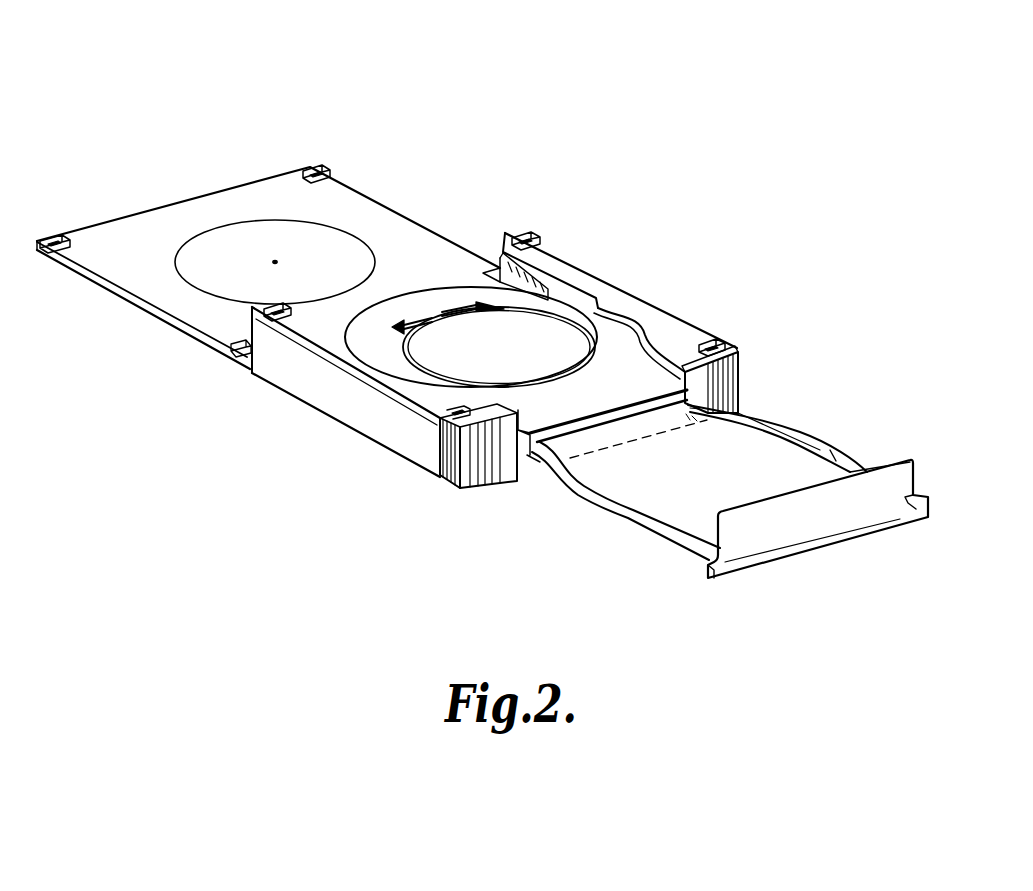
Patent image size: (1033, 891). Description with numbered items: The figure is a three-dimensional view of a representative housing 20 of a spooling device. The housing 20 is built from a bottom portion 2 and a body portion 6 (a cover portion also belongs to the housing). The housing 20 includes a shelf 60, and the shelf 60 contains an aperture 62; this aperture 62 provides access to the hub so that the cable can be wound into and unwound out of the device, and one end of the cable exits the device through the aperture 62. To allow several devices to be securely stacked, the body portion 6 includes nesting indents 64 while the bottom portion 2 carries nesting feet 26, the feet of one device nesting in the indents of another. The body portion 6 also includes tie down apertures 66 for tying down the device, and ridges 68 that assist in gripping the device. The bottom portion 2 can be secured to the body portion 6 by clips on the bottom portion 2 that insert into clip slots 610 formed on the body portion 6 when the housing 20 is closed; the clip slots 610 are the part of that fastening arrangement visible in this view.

The housing 20 is at (748, 138).
The bottom portion 2 is at (193, 302).
The nesting feet 26 is at (307, 168).
The body portion 6 is at (363, 408).
The shelf 60 is at (548, 307).
The aperture 62 is at (520, 355).
The nesting indents 64 is at (290, 306).
The tie down apertures 66 is at (655, 330).
The ridges 68 is at (478, 460).
The clip slots 610 is at (705, 413).